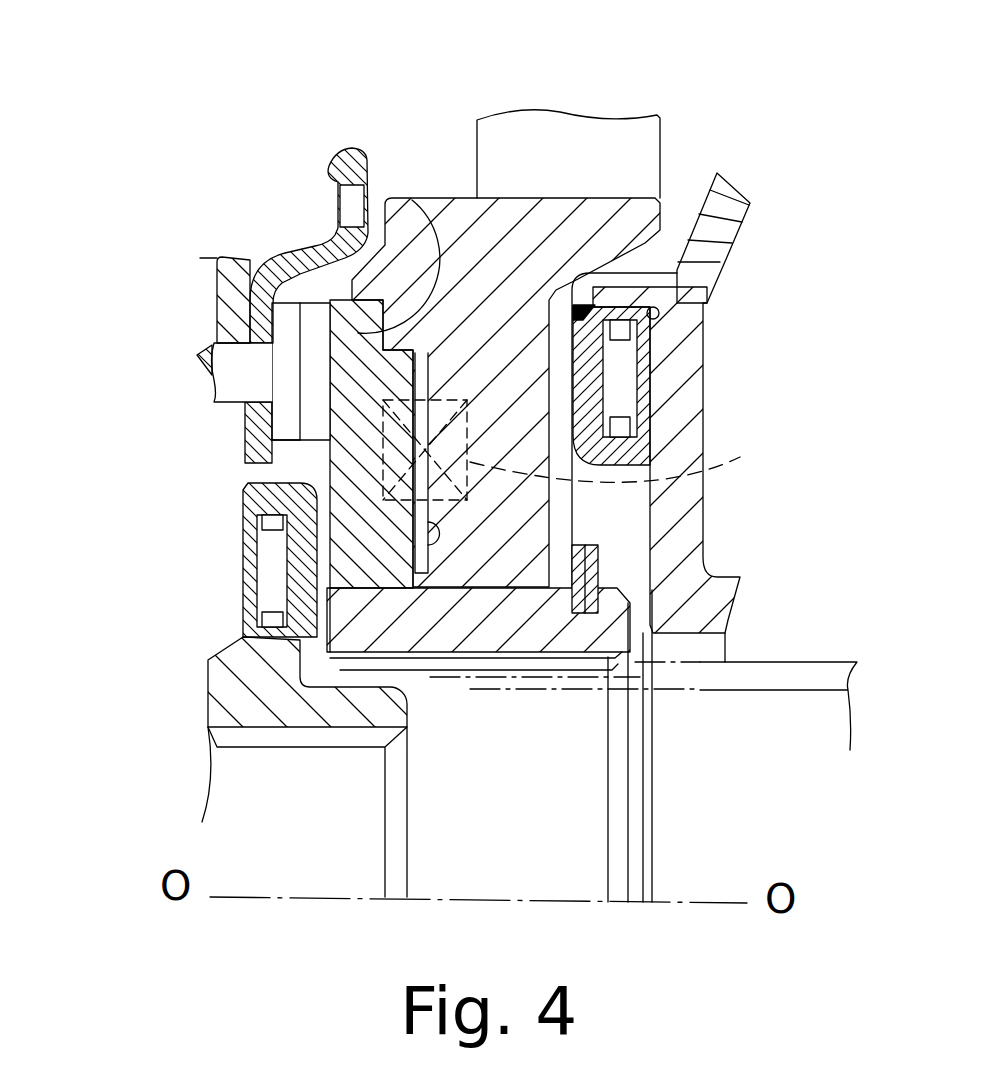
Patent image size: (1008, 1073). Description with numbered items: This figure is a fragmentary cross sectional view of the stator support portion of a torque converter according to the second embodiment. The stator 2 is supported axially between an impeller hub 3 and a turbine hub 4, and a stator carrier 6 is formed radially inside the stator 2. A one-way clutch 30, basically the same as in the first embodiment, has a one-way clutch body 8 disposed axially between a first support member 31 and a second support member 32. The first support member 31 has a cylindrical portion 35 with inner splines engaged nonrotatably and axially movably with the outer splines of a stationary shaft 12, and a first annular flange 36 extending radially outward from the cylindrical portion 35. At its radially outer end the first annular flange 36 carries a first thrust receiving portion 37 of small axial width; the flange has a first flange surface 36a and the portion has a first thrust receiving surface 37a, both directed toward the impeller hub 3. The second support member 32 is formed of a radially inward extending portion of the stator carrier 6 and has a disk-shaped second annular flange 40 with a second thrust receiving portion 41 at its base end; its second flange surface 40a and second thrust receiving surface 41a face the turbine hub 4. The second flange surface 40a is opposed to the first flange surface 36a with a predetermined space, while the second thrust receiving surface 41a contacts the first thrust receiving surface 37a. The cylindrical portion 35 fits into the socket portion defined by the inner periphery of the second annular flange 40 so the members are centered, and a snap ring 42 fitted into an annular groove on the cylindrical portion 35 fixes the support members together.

The stator 2 is at (640, 148).
The impeller hub 3 is at (690, 318).
The turbine hub 4 is at (203, 270).
The stator carrier 6 is at (665, 200).
The one-way clutch body 8 is at (618, 459).
The stationary shaft 12 is at (827, 673).
The one-way clutch 30 is at (414, 172).
The first support member 31 is at (626, 594).
The second support member 32 is at (443, 198).
The cylindrical portion 35 is at (543, 632).
The first annular flange 36 is at (343, 490).
The first flange surface 36a is at (287, 562).
The first thrust receiving portion 37 is at (345, 316).
The first thrust receiving surface 37a is at (403, 195).
The second annular flange 40 is at (545, 367).
The second flange surface 40a is at (373, 450).
The second thrust receiving portion 41 is at (373, 407).
The second thrust receiving surface 41a is at (270, 358).
The snap ring 42 is at (598, 552).